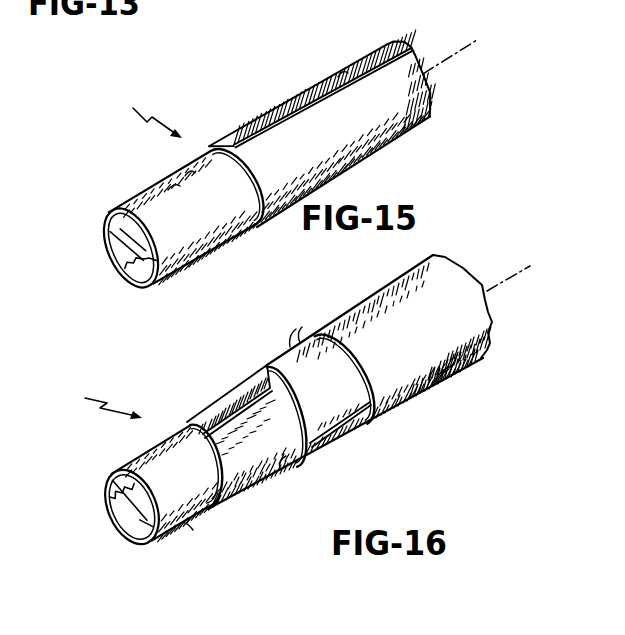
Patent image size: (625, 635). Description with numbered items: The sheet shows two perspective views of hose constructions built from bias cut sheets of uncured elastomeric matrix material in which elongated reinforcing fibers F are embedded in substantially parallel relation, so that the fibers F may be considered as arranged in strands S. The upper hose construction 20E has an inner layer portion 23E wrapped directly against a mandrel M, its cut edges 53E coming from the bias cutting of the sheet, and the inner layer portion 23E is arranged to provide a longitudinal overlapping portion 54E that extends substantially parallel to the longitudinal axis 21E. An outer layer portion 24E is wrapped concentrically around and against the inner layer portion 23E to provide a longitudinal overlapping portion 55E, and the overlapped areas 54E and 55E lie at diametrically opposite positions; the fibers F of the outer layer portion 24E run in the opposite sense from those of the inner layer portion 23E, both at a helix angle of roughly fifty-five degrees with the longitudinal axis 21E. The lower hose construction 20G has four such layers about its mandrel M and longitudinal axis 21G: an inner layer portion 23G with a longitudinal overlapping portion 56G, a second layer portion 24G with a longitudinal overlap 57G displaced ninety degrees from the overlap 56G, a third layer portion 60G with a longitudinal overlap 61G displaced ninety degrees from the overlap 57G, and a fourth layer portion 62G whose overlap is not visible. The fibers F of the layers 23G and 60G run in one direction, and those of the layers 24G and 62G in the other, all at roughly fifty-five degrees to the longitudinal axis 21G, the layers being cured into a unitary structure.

In FIG. 15, the hose construction 20E is at (137, 114).
In FIG. 15, the longitudinal axis 21E is at (458, 48).
In FIG. 15, the inner layer portion 23E is at (198, 258).
In FIG. 15, the outer layer portion 24E is at (380, 153).
In FIG. 15, the cut edges 53E is at (150, 287).
In FIG. 15, the longitudinal overlapping portion 54E is at (148, 280).
In FIG. 15, the longitudinal overlapping portion 55E is at (280, 122).
In FIG. 15, the strands S is at (130, 207).
In FIG. 15, the reinforcing fibers F is at (170, 188).
In FIG. 16, the reinforcing fibers F is at (290, 347).
In FIG. 15, the mandrel M is at (128, 243).
In FIG. 16, the mandrel M is at (125, 510).
In FIG. 16, the hose construction 20G is at (91, 402).
In FIG. 16, the longitudinal axis 21G is at (513, 270).
In FIG. 16, the inner layer portion 23G is at (142, 460).
In FIG. 16, the second layer portion 24G is at (257, 487).
In FIG. 16, the longitudinal overlapping portion 56G is at (105, 485).
In FIG. 16, the longitudinal overlap 57G is at (222, 395).
In FIG. 16, the third layer portion 60G is at (268, 366).
In FIG. 16, the longitudinal overlap 61G is at (333, 437).
In FIG. 16, the fourth layer portion 62G is at (377, 297).